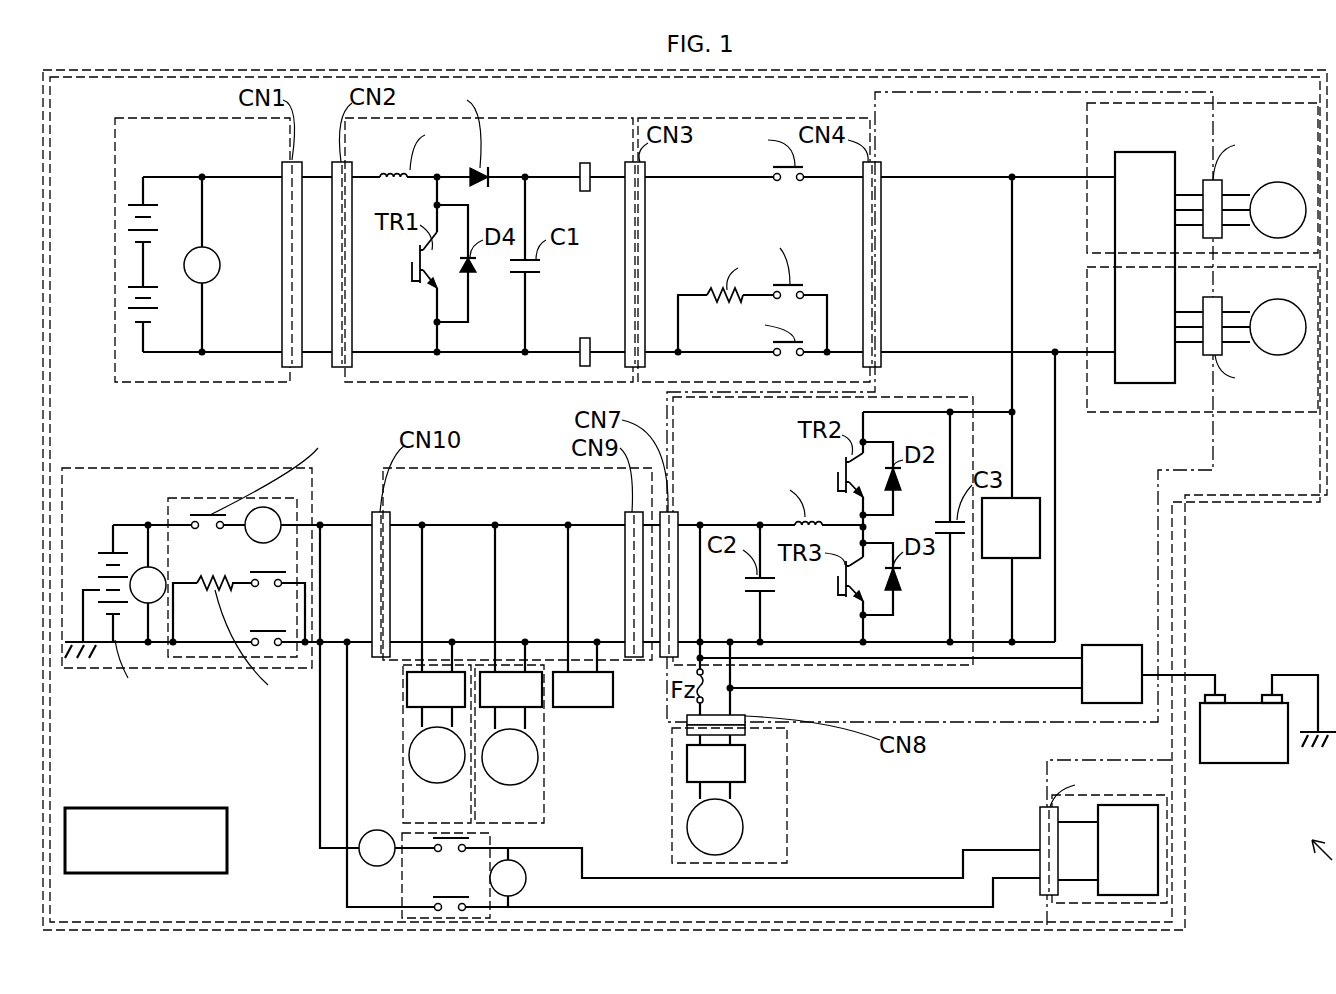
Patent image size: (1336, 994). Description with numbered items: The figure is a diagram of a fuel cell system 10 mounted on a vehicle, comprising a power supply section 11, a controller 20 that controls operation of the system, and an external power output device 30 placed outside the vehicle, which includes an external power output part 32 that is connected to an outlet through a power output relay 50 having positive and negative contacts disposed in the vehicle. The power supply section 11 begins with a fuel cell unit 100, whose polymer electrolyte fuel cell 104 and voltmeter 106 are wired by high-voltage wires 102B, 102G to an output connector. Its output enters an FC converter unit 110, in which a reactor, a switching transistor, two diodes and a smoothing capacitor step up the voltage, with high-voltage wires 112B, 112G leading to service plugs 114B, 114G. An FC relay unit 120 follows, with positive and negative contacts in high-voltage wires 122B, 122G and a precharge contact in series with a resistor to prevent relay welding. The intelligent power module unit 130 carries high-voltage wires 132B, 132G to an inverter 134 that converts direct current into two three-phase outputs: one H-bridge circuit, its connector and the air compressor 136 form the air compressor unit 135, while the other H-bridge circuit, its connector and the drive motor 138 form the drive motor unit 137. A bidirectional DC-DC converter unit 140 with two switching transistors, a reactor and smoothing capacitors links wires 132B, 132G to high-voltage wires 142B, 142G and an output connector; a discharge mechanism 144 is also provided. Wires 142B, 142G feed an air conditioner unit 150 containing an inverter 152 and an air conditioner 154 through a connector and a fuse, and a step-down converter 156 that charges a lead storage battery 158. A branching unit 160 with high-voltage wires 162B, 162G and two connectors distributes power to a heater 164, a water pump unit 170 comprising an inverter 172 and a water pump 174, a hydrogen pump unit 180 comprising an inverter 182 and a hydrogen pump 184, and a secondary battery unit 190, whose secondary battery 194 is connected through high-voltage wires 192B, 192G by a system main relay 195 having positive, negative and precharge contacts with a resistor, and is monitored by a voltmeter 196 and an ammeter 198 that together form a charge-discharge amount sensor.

The fuel cell system 10 is at (1185, 575).
The power supply section 11 is at (1172, 640).
The controller 20 is at (190, 808).
The external power output device 30 is at (1165, 830).
The external power output part 32 is at (1115, 866).
The power output relay 50 is at (402, 897).
The fuel cell unit 100 is at (150, 118).
The high-voltage wire 102B is at (208, 177).
The high-voltage wire 102G is at (208, 352).
The fuel cell 104 is at (128, 205).
The voltmeter 106 is at (208, 247).
The FC converter unit 110 is at (600, 118).
The high-voltage wire 112B is at (522, 177).
The high-voltage wire 112G is at (457, 355).
The service plug 114B is at (585, 163).
The service plug 114G is at (583, 368).
The FC relay unit 120 is at (792, 118).
The high-voltage wire 122B is at (665, 180).
The high-voltage wire 122G is at (656, 352).
The intelligent power module unit 130 is at (1158, 522).
The high-voltage wire 132B is at (925, 180).
The high-voltage wire 132G is at (925, 350).
The inverter 134 is at (1115, 170).
The air compressor unit 135 is at (1087, 128).
The air compressor 136 is at (1265, 185).
The drive motor unit 137 is at (1255, 412).
The drive motor 138 is at (1262, 300).
The DC-DC converter unit 140 is at (920, 397).
The high-voltage wire 142B is at (703, 525).
The high-voltage wire 142G is at (770, 642).
The discharge mechanism 144 is at (1040, 500).
The air conditioner unit 150 is at (787, 795).
The inverter 152 is at (745, 760).
The air conditioner 154 is at (745, 828).
The step-down converter 156 is at (1130, 645).
The lead storage battery 158 is at (1250, 695).
The branching unit 160 is at (490, 468).
The high-voltage wire 162B is at (505, 525).
The high-voltage wire 162G is at (505, 642).
The heater 164 is at (590, 707).
The water pump unit 170 is at (542, 765).
The inverter 172 is at (540, 707).
The water pump 174 is at (538, 770).
The hydrogen pump unit 180 is at (403, 770).
The inverter 182 is at (407, 690).
The hydrogen pump 184 is at (440, 782).
The secondary battery unit 190 is at (215, 498).
The high-voltage wire 192B is at (165, 525).
The high-voltage wire 192G is at (165, 642).
The secondary battery 194 is at (118, 553).
The system main relay 195 is at (322, 545).
The voltmeter 196 is at (140, 567).
The ammeter 198 is at (263, 507).